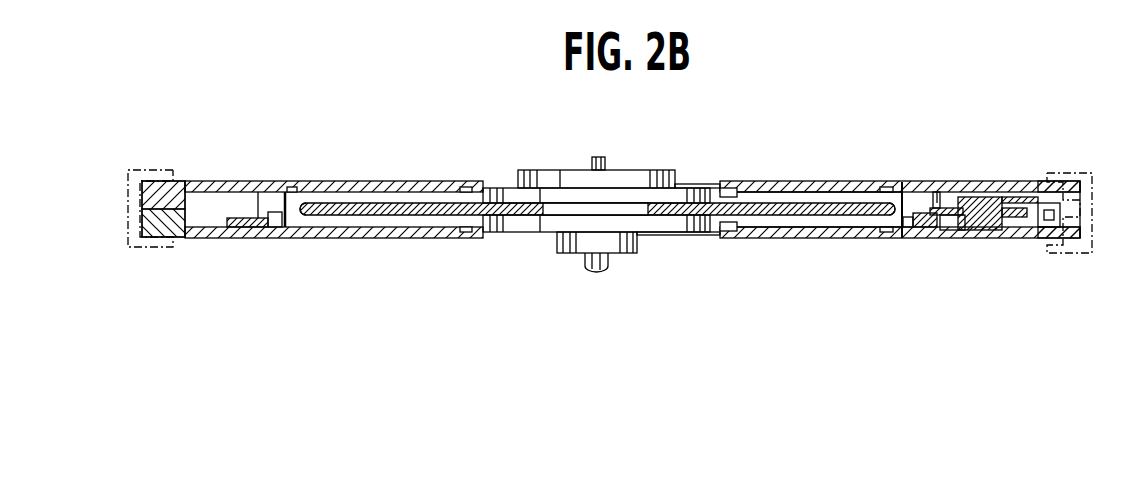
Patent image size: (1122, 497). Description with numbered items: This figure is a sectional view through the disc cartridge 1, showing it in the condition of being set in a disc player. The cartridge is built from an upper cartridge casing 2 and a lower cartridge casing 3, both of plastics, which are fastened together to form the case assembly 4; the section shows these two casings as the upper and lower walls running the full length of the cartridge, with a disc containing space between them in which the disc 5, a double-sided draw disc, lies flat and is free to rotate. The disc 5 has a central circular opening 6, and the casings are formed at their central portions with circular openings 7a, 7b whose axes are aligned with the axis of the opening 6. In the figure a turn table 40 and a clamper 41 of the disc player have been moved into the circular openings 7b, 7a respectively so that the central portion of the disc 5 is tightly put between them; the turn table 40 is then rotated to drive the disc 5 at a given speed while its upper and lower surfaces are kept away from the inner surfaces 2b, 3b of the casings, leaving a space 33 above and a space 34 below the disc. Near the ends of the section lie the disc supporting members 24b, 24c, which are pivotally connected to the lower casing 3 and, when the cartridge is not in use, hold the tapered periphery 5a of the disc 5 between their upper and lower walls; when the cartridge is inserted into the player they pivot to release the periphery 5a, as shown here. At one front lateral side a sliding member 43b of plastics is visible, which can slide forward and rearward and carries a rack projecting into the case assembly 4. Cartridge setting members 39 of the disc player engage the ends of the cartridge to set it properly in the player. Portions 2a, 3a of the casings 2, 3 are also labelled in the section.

The disc cartridge 1 is at (318, 157).
The upper cartridge casing 2 is at (795, 186).
The outer cylinder right portion 2a is at (737, 192).
The inner surface of upper cartridge casing 2b is at (378, 192).
The lower cartridge casing 3 is at (793, 238).
The inner cylinder right portion 3a is at (752, 238).
The inner surface of lower cartridge casing 3b is at (383, 229).
The case assembly 4 is at (988, 176).
The disc 5 is at (510, 220).
The periphery of the disc 5a is at (307, 217).
The central circular opening of the disc 6 is at (541, 205).
The circular opening of upper cartridge casing 7a is at (470, 190).
The circular opening of lower cartridge casing 7b is at (472, 237).
The disc supporting member 24b is at (267, 196).
The disc supporting member 24c is at (925, 200).
The space 33 is at (838, 197).
The space 34 is at (845, 225).
The cartridge setting members 39 is at (136, 170).
The turn table 40 is at (682, 230).
The clamper 41 is at (660, 195).
The sliding member 43b is at (1040, 222).